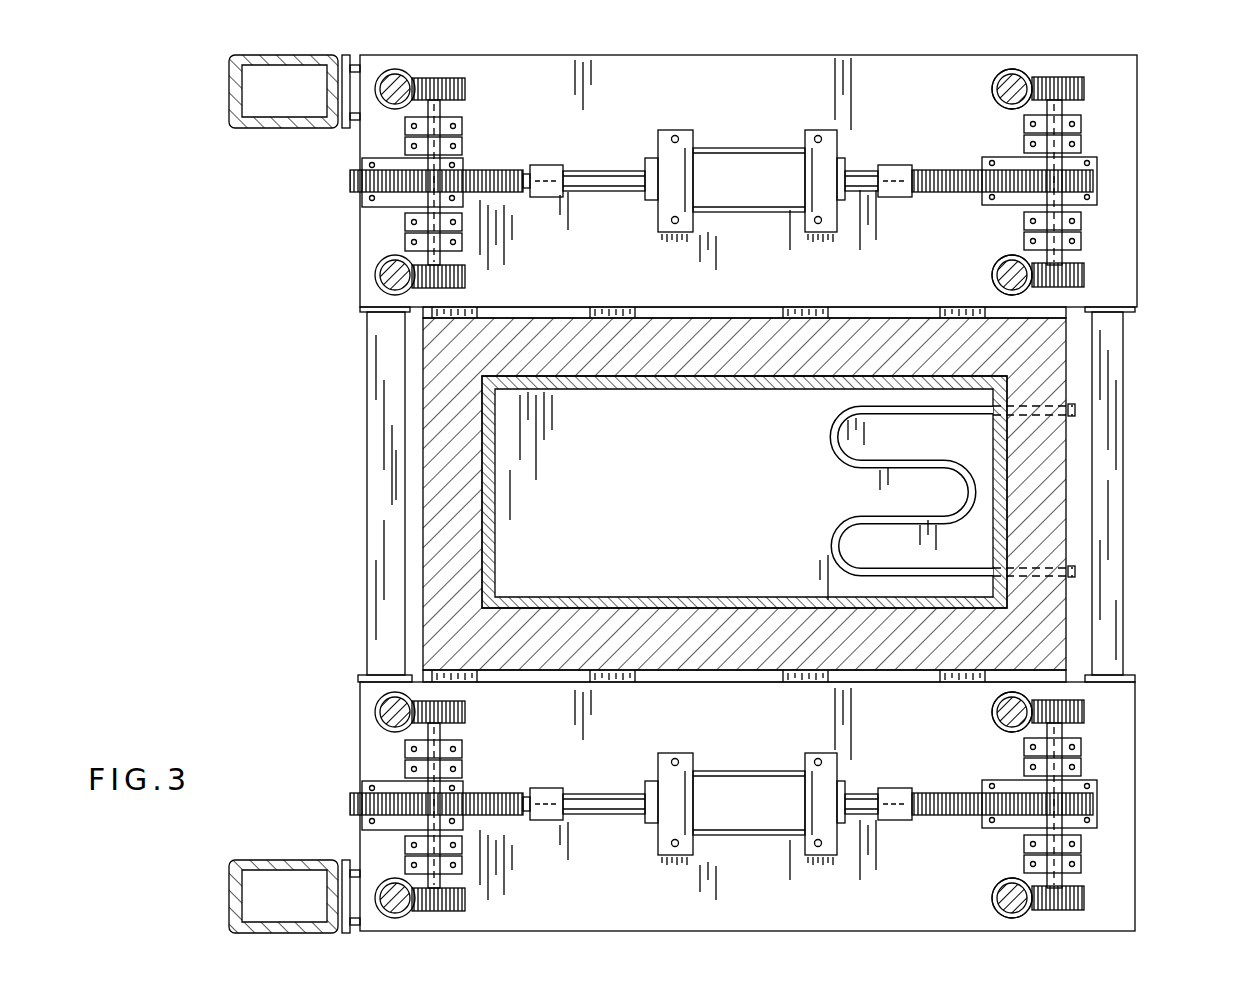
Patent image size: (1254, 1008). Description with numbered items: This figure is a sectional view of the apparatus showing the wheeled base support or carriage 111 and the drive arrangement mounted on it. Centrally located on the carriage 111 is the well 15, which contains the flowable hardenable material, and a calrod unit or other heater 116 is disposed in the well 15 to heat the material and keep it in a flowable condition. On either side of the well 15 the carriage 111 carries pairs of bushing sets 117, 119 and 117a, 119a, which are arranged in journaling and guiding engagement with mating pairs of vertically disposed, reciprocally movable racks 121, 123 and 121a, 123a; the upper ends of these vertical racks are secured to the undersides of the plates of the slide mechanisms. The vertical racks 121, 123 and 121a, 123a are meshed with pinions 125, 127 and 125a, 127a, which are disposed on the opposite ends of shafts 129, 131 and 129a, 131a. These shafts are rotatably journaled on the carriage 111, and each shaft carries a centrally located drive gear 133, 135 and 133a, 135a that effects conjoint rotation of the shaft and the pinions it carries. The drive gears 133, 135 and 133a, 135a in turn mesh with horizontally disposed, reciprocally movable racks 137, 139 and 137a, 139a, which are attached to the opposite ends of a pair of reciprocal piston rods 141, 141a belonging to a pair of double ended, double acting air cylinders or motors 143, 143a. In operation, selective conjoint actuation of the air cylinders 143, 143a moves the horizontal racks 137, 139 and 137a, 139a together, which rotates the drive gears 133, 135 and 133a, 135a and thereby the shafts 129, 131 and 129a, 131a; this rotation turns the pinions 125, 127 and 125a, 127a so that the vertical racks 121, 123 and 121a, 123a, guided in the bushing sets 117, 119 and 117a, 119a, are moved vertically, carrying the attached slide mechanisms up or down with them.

The well 15 is at (730, 502).
The heater 116 is at (932, 415).
The carriage 111 is at (1172, 600).
The bushing set 117 is at (378, 706).
The bushing set 117a is at (375, 94).
The bushing set 119 is at (990, 716).
The bushing set 119a is at (990, 92).
The vertical rack 121 is at (378, 718).
The vertical rack 121a is at (378, 84).
The vertical rack 123 is at (997, 704).
The vertical rack 123a is at (995, 80).
The pinion 125 is at (463, 708).
The pinion 125a is at (465, 84).
The pinion 127 is at (1083, 708).
The pinion 127a is at (1085, 83).
The shaft 129 is at (440, 730).
The shaft 129a is at (440, 108).
The shaft 131 is at (1062, 730).
The shaft 131a is at (1062, 105).
The drive gear 133 is at (408, 797).
The drive gear 133a is at (408, 192).
The drive gear 135 is at (1073, 818).
The drive gear 135a is at (1072, 193).
The horizontal rack 137 is at (483, 795).
The horizontal rack 137a is at (490, 170).
The horizontal rack 139 is at (947, 795).
The horizontal rack 139a is at (960, 170).
The piston rod 141 is at (605, 795).
The piston rod 141a is at (612, 171).
The air cylinder 143 is at (775, 817).
The air cylinder 143a is at (780, 189).